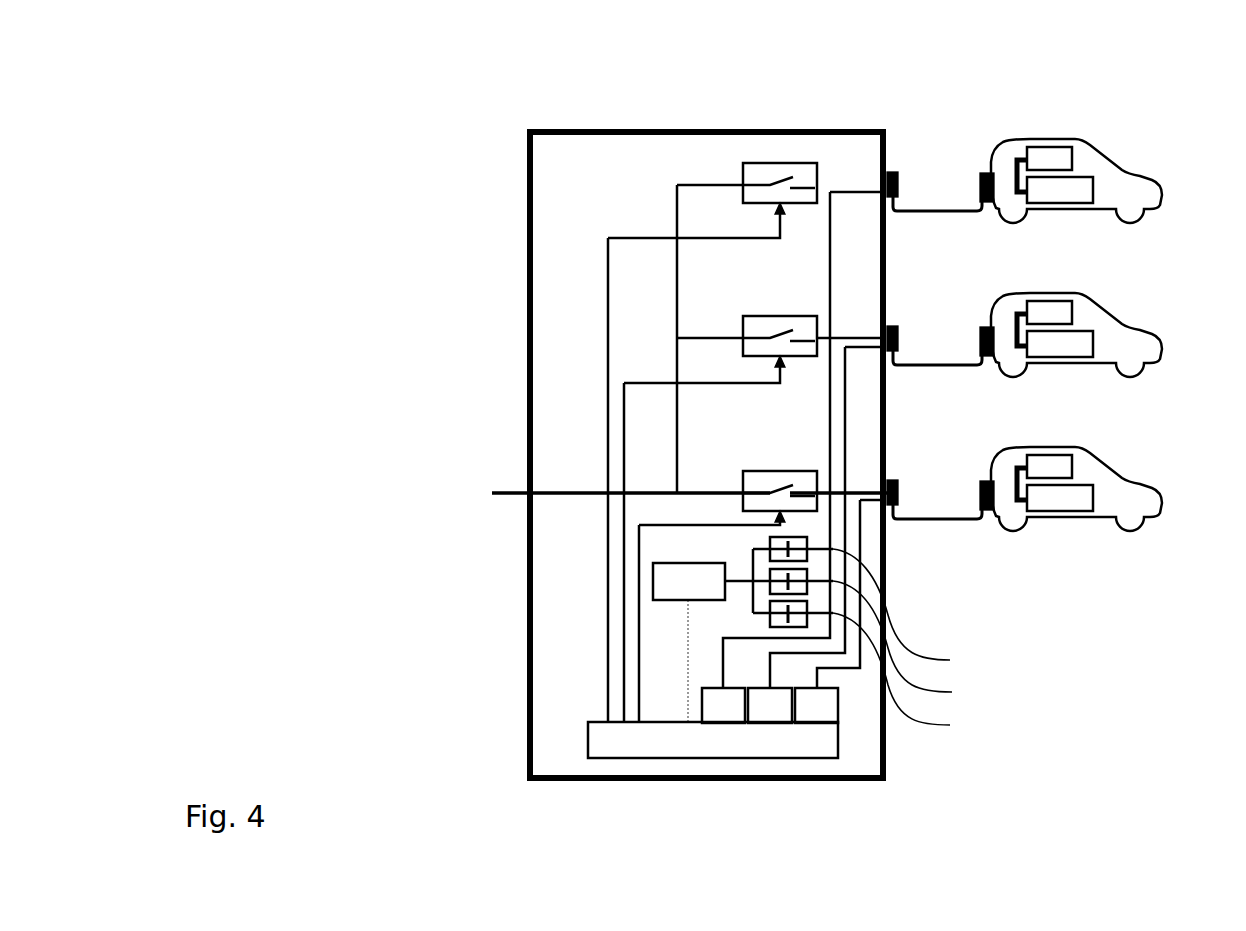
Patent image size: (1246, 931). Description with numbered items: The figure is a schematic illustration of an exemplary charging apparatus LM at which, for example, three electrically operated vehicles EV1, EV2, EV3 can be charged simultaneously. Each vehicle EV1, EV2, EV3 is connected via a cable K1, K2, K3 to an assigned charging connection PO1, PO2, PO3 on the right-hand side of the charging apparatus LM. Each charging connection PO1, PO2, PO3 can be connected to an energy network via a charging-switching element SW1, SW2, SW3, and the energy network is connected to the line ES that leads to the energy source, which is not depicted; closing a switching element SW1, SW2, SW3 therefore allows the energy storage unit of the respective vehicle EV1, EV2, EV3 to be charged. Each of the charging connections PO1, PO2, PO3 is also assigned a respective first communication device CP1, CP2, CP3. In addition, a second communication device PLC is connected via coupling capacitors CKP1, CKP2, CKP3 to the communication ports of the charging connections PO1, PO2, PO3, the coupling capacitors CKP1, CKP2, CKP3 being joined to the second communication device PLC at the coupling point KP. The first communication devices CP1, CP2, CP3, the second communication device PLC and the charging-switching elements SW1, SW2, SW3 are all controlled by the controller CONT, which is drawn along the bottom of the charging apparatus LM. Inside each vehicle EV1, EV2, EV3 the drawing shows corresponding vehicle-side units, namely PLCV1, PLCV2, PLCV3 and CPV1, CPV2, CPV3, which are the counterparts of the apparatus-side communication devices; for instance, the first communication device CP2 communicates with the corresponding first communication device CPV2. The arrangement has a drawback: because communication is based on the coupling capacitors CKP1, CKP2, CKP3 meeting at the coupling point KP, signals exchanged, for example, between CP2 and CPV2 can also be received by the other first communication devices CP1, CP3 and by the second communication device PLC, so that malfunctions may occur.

The charging apparatus LM is at (602, 130).
The charging-switching element SW1 is at (772, 175).
The charging-switching element SW2 is at (772, 328).
The charging-switching element SW3 is at (772, 483).
The line ES is at (492, 492).
The second communication device PLC is at (653, 573).
The coupling point KP is at (738, 578).
The coupling capacitor CKP1 is at (922, 615).
The coupling capacitor CKP2 is at (922, 647).
The coupling capacitor CKP3 is at (922, 679).
The controller CONT is at (620, 747).
The first communication device CP1 is at (727, 712).
The first communication device CP2 is at (775, 712).
The first communication device CP3 is at (822, 712).
The charging connection PO1 is at (898, 130).
The charging connection PO2 is at (917, 310).
The charging connection PO3 is at (927, 478).
The cable K1 is at (955, 213).
The cable K2 is at (930, 368).
The cable K3 is at (950, 523).
The vehicle EV1 is at (1121, 167).
The vehicle EV2 is at (1163, 337).
The vehicle EV3 is at (1163, 487).
The vehicle power line communication unit PLCV1 is at (1049, 140).
The vehicle power line communication unit PLCV2 is at (1113, 297).
The vehicle power line communication unit PLCV3 is at (1113, 450).
The vehicle control pilot unit CPV1 is at (1050, 210).
The first communication device CPV2 is at (1047, 367).
The vehicle control pilot unit CPV3 is at (1080, 522).